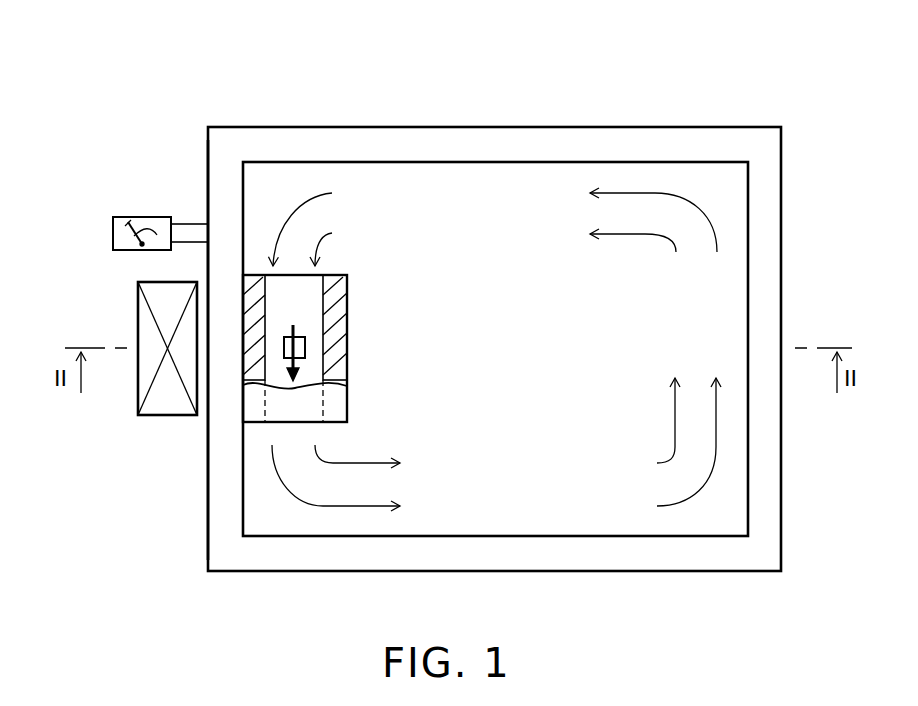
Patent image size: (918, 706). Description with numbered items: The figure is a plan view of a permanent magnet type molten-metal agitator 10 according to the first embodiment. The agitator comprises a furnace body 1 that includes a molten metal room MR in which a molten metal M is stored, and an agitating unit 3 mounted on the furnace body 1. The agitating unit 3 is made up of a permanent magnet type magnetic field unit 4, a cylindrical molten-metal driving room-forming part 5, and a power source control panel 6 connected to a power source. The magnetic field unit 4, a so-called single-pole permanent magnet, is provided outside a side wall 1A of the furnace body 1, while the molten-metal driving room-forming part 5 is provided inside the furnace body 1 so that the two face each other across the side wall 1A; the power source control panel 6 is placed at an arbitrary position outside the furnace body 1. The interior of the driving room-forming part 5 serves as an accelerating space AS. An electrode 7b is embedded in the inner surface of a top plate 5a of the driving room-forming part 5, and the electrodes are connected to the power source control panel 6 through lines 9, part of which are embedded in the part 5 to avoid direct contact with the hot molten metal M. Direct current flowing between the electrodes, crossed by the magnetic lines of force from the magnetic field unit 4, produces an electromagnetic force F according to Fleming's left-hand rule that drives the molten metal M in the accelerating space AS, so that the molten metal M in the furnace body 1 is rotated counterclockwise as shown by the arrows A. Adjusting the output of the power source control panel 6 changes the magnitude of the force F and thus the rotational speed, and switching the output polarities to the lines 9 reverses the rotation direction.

The permanent magnet type molten-metal agitator 10 is at (502, 110).
The furnace body 1 is at (709, 122).
The side wall 1A is at (227, 180).
The molten metal room MR is at (397, 160).
The molten metal M is at (695, 278).
The arrows A is at (338, 466).
The electromagnetic force F is at (294, 323).
The agitating unit 3 is at (86, 280).
The permanent magnet type magnetic field unit 4 is at (165, 415).
The cylindrical molten-metal driving room-forming part 5 is at (324, 351).
The top plate 5a is at (310, 408).
The power source control panel 6 is at (143, 217).
The electrode 7b is at (305, 345).
The lines 9 is at (177, 236).
The accelerating space AS is at (339, 298).